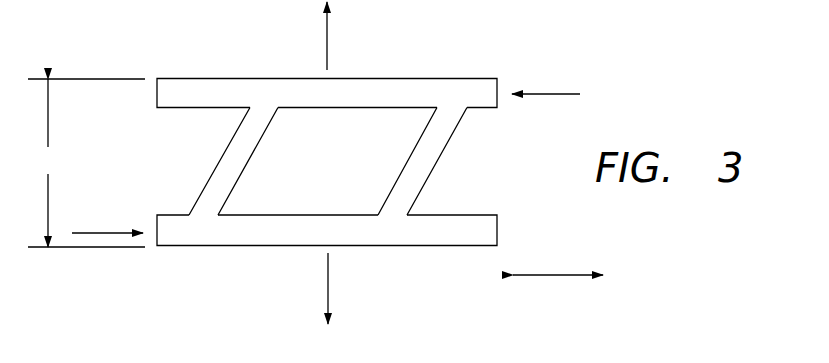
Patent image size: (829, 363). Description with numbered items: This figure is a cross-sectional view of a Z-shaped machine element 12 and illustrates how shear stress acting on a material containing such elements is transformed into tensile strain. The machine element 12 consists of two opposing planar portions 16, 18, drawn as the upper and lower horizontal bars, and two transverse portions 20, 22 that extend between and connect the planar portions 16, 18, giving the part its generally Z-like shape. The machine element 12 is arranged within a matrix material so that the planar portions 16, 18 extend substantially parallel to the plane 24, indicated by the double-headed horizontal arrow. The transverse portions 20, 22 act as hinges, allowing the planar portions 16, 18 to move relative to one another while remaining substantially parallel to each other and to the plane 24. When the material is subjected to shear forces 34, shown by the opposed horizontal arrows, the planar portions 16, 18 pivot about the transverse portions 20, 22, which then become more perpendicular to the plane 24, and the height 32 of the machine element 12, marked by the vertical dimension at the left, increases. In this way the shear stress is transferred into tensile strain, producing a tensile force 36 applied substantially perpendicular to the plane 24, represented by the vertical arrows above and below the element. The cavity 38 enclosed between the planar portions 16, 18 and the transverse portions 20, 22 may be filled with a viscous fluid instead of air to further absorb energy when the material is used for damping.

The machine element 12 is at (333, 152).
The planar portion 16 is at (203, 78).
The planar portion 18 is at (230, 246).
The transverse portion 20 is at (208, 178).
The transverse portion 22 is at (437, 160).
The plane 24 is at (554, 275).
The height 32 is at (86, 163).
The shear forces 34 is at (552, 91).
The tensile force 36 is at (327, 45).
The cavity 38 is at (342, 172).